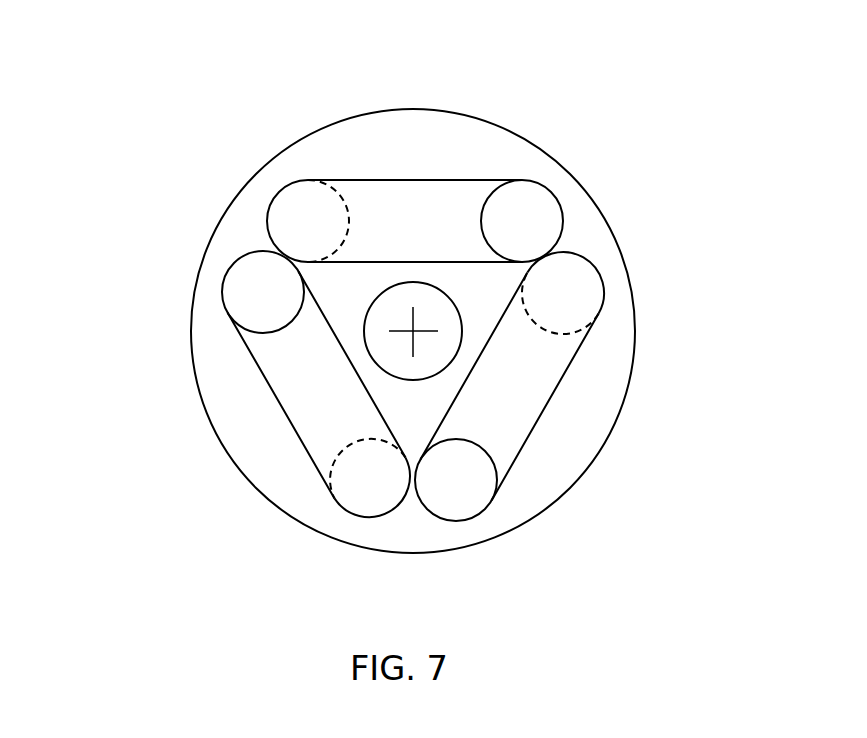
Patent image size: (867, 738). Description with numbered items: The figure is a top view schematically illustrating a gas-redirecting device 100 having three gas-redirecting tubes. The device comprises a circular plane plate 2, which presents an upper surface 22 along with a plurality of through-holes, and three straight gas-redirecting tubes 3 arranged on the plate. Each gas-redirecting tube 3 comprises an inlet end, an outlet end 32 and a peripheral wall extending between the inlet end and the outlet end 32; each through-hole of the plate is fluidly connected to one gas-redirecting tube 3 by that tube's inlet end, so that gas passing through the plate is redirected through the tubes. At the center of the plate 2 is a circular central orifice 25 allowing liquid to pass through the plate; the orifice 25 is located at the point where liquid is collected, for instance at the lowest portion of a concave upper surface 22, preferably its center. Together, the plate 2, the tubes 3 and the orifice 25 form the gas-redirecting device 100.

The gas-redirecting device 100 is at (79, 194).
The plate 2 is at (186, 373).
The upper surface 22 is at (595, 413).
The gas-redirecting tube 3 is at (372, 180).
The outlet end 32 is at (524, 223).
The orifice 25 is at (411, 368).